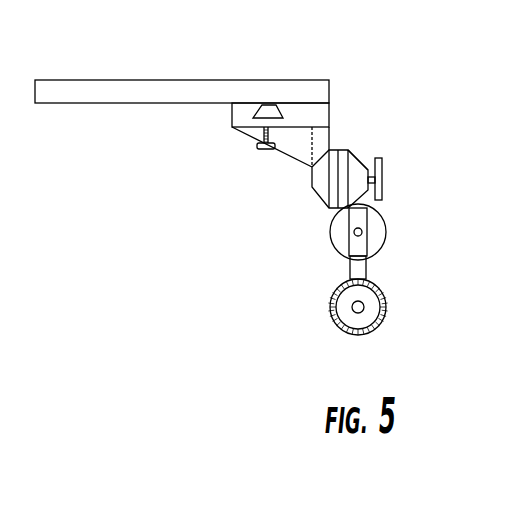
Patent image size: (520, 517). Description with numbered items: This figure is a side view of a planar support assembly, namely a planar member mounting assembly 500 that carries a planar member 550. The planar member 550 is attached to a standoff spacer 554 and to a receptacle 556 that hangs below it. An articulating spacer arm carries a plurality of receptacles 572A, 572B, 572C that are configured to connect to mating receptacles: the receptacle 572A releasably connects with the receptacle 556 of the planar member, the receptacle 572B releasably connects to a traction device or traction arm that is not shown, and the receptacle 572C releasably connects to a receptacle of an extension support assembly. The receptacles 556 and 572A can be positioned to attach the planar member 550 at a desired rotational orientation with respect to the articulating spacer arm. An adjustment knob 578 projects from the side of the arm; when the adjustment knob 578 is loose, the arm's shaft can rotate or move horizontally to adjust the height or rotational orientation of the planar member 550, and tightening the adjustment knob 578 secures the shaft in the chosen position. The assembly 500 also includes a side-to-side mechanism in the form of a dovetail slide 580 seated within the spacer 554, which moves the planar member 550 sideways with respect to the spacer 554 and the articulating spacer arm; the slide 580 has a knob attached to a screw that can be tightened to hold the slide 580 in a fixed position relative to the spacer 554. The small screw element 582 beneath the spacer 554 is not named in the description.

The planar member mounting assembly 500 is at (410, 120).
The planar member 550 is at (187, 87).
The standoff spacer 554 is at (242, 118).
The receptacle 556 is at (318, 185).
The receptacle 572A is at (358, 168).
The receptacle 572B is at (387, 230).
The receptacle 572C is at (372, 308).
The adjustment knob 578 is at (384, 177).
The dovetail slide 580 is at (275, 112).
The screw 582 is at (258, 149).